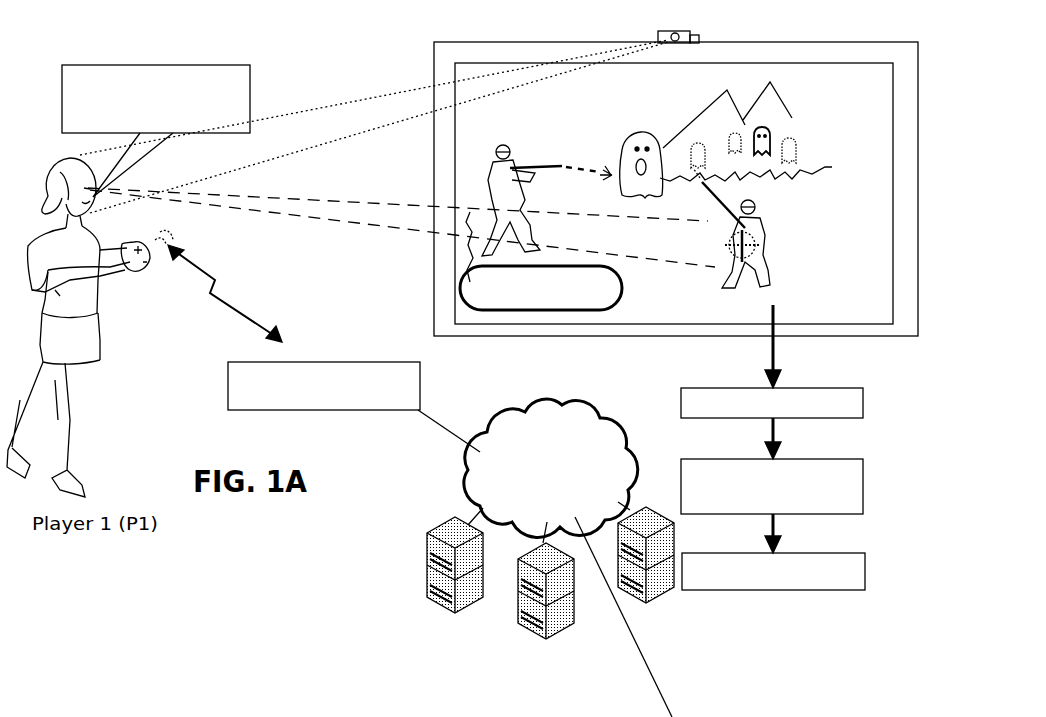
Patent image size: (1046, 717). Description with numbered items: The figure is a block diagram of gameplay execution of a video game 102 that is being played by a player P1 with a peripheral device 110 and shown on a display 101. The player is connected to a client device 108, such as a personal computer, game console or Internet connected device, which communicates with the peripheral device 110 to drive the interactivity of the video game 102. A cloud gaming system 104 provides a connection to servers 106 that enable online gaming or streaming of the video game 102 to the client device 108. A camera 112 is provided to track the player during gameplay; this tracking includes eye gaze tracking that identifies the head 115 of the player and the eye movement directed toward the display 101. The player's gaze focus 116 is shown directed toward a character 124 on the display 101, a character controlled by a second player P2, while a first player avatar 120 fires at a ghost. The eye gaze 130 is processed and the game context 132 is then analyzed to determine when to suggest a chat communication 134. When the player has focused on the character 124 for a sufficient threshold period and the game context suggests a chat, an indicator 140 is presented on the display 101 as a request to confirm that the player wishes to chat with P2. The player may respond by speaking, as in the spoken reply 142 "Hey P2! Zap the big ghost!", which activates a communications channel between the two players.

The display 101 is at (434, 47).
The video game 102 is at (843, 88).
The cloud gaming system 104 is at (527, 426).
The servers 106 is at (460, 614).
The client device 108 is at (348, 362).
The peripheral device 110 is at (137, 276).
The camera 112 is at (678, 45).
The head 115 is at (343, 100).
The gaze focus 116 is at (358, 201).
The player 1 character 120 is at (512, 150).
The character 124 is at (766, 216).
The eye gaze 130 is at (865, 403).
The game context 132 is at (866, 484).
The chat communication 134 is at (866, 569).
The indicator 140 is at (623, 291).
The voice chat speech bubble 142 is at (235, 66).